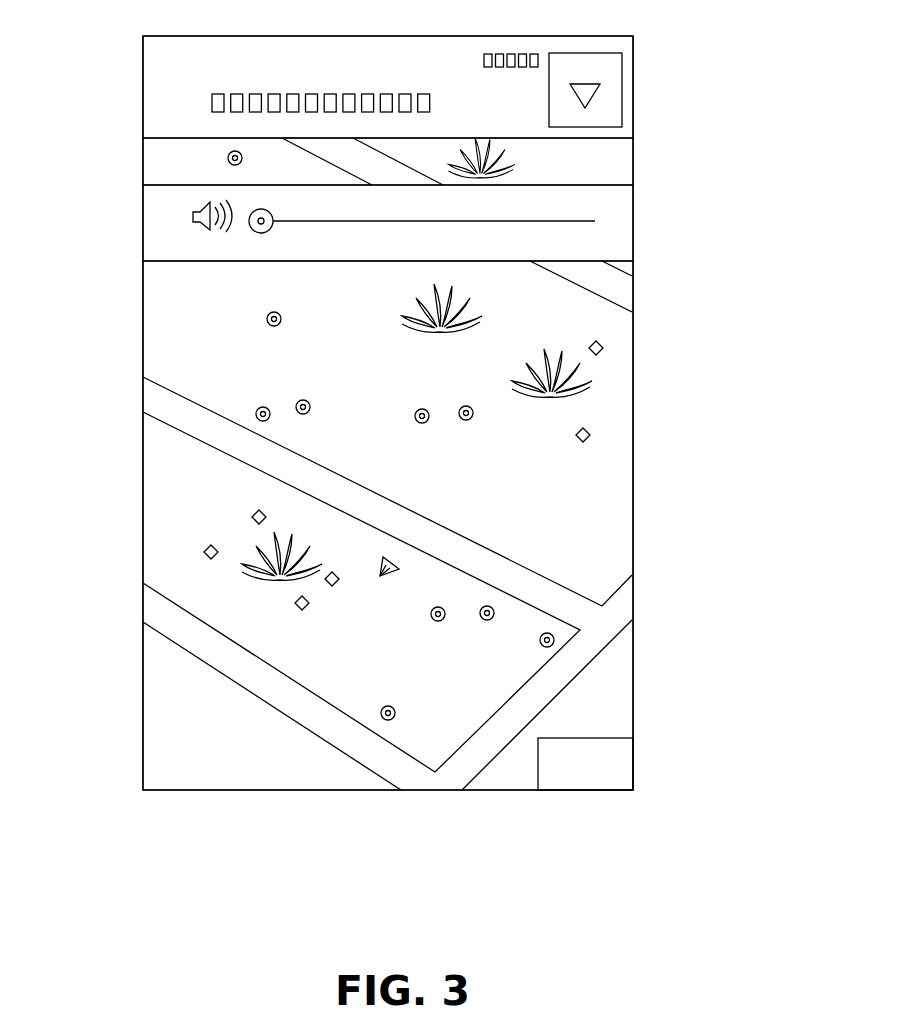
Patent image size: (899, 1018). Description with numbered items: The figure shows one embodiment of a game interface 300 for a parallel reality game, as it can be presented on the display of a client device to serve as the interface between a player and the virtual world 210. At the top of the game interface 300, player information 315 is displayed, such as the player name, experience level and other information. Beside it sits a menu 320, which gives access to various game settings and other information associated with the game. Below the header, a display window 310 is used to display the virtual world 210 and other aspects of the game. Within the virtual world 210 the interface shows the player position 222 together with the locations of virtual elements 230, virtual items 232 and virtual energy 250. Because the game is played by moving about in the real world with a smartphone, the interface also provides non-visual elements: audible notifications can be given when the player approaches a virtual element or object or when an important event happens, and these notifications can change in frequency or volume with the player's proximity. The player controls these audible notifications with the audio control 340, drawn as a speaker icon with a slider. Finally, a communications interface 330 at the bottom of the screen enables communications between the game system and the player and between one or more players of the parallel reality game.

The game interface 300 is at (723, 127).
The player information 315 is at (158, 57).
The menu 320 is at (597, 89).
The display window 310 is at (628, 165).
The audio control 340 is at (158, 205).
The virtual world 210 is at (628, 497).
The virtual elements 230 is at (406, 310).
The virtual energy 250 is at (282, 322).
The virtual items 232 is at (252, 517).
The player position 222 is at (381, 576).
The communications interface 330 is at (630, 768).